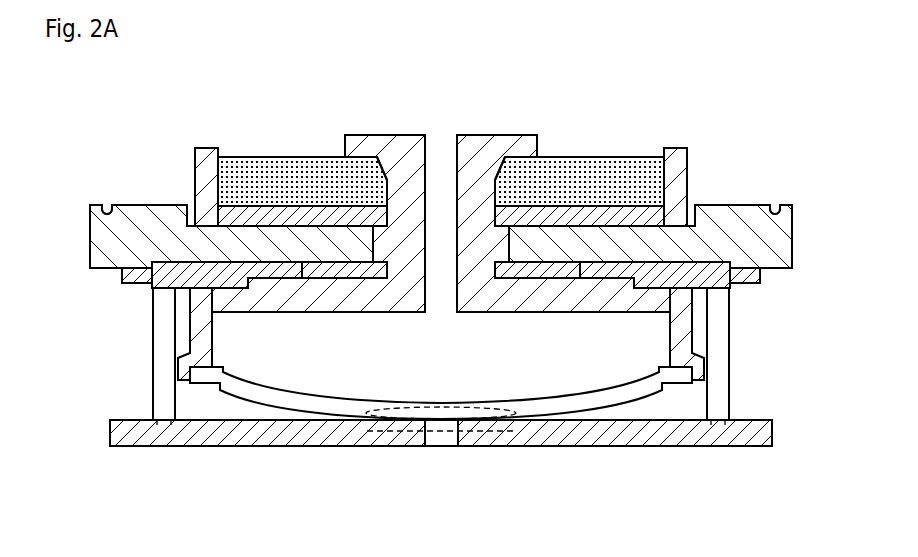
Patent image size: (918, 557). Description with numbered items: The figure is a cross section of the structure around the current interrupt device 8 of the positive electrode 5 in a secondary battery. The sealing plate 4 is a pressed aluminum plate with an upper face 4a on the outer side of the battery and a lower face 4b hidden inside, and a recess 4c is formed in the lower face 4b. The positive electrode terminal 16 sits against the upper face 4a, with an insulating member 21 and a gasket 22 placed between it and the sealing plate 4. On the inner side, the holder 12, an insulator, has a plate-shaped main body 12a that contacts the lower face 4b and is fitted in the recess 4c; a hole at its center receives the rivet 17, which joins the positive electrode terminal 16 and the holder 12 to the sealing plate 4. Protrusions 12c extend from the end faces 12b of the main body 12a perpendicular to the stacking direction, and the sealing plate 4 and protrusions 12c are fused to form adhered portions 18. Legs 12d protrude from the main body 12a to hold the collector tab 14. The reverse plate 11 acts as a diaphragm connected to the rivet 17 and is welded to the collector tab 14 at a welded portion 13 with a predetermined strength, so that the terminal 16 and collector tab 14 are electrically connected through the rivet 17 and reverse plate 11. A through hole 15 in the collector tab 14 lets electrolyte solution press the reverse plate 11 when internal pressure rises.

The positive electrode 5 is at (209, 85).
The rivet 17 is at (480, 123).
The positive electrode terminal 16 is at (589, 156).
The main body 12a is at (633, 262).
The sealing plate 4 is at (729, 188).
The insulating member 21 is at (195, 187).
The upper face 4a is at (266, 207).
The gasket 22 is at (345, 258).
The adhered portion 18 is at (117, 258).
The end face 12b is at (137, 285).
The protrusion 12c is at (760, 278).
The lower face 4b is at (268, 263).
The recess 4c is at (716, 290).
The current interrupt device 8 is at (125, 343).
The welded portion 13 is at (441, 402).
The holder 12 is at (739, 378).
The leg 12d is at (152, 402).
The through hole 15 is at (431, 447).
The collector tab 14 is at (494, 447).
The reverse plate 11 is at (598, 407).